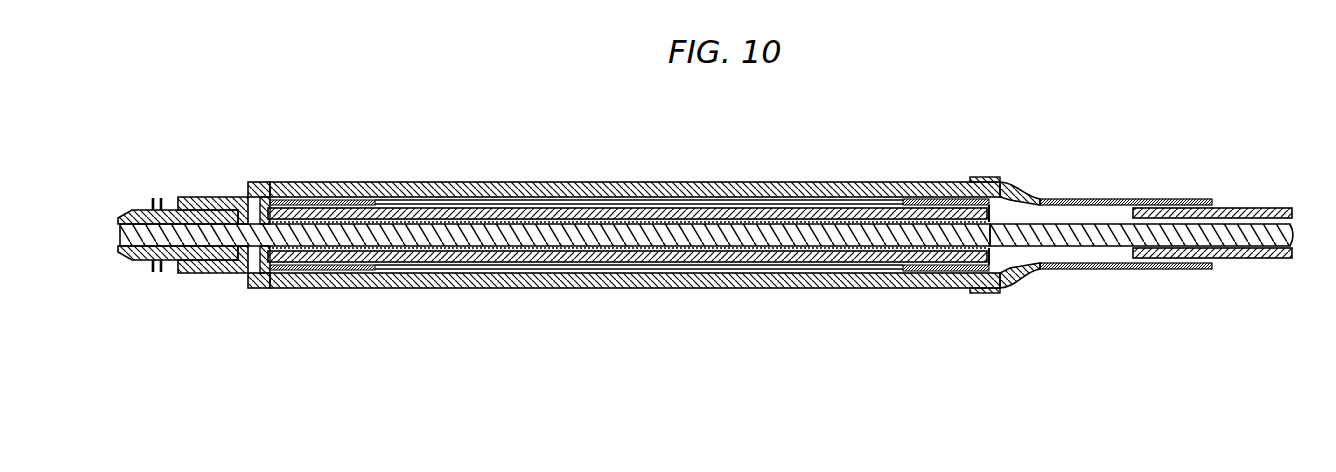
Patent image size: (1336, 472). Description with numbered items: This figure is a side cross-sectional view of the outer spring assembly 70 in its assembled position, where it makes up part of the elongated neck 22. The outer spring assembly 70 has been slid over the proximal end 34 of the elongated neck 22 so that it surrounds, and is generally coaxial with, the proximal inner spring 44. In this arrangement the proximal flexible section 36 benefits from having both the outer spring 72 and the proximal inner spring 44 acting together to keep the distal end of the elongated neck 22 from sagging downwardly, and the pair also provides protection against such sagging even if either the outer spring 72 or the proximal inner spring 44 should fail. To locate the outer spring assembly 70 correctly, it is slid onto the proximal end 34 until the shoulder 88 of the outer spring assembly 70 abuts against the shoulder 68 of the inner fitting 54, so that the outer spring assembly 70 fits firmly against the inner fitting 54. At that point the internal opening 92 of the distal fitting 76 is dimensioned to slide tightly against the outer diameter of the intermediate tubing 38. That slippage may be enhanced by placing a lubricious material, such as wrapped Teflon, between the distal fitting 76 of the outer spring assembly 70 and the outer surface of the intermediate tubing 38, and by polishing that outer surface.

The elongated neck 22 is at (1134, 168).
The proximal end 34 is at (133, 211).
The proximal flexible section 36 is at (807, 157).
The intermediate tubing 38 is at (1172, 203).
The proximal inner spring 44 is at (575, 210).
The inner fitting 54 is at (210, 263).
The shoulder 68 is at (268, 182).
The outer spring assembly 70 is at (430, 182).
The outer spring 72 is at (450, 277).
The distal fitting 76 is at (992, 290).
The shoulder 88 is at (248, 194).
The internal opening 92 is at (1077, 269).